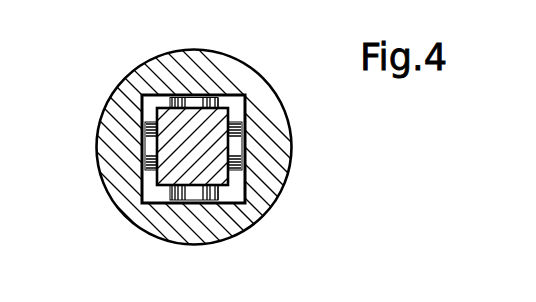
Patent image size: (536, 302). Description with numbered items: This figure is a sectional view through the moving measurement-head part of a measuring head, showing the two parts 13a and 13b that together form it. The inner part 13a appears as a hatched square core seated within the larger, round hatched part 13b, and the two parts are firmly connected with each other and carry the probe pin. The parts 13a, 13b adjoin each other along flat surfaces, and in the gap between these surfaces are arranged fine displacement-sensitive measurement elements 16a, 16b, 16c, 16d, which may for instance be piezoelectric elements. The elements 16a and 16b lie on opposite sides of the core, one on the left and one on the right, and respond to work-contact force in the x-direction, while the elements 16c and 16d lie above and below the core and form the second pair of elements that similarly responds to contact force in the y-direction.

The moving measurement-head part 13a is at (212, 172).
The moving measurement-head part 13b is at (121, 95).
The displacement-sensitive measurement element 16a is at (147, 145).
The displacement-sensitive measurement element 16b is at (238, 143).
The displacement-sensitive measurement element 16c is at (196, 104).
The displacement-sensitive measurement element 16d is at (187, 196).